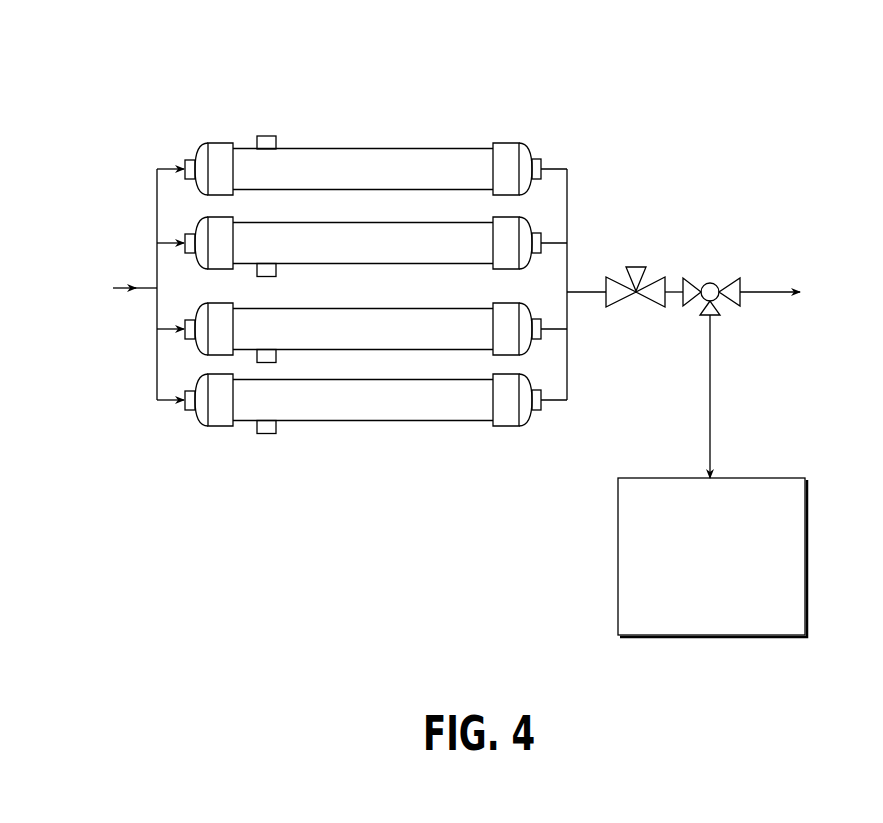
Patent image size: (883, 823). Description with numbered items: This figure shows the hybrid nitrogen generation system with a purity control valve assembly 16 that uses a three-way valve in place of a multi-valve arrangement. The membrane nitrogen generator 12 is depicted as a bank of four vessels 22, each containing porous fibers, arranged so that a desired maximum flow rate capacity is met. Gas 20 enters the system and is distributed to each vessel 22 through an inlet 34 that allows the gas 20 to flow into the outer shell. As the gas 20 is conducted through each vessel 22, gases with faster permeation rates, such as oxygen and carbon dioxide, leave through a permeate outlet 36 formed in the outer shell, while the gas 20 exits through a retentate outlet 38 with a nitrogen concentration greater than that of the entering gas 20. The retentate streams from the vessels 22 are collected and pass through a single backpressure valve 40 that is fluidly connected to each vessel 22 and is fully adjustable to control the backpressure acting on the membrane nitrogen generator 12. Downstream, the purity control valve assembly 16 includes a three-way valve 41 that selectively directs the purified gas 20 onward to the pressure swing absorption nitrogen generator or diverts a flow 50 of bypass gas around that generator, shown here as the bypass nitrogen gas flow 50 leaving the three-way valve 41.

The membrane nitrogen generator 12 is at (338, 122).
The purity control valve assembly 16 is at (678, 226).
The gas 20 is at (118, 288).
The vessel 22 is at (428, 160).
The inlet 34 is at (189, 158).
The permeate outlet 36 is at (257, 141).
The retentate outlet 38 is at (543, 161).
The backpressure valve 40 is at (619, 276).
The three-way valve 41 is at (711, 282).
The flow of bypass gas 50 is at (806, 538).